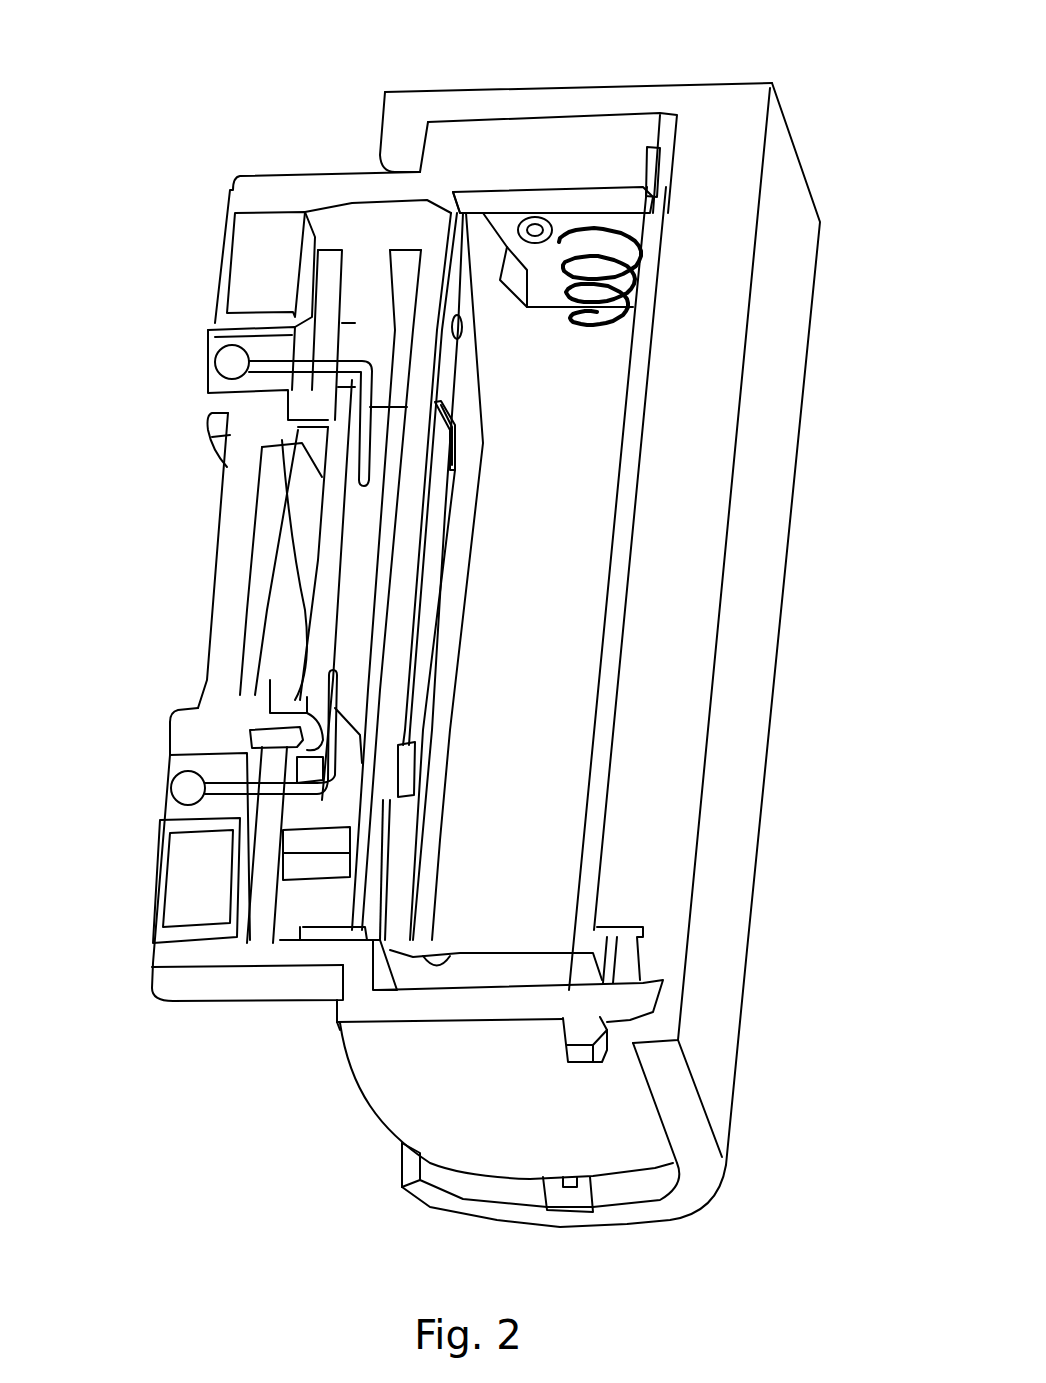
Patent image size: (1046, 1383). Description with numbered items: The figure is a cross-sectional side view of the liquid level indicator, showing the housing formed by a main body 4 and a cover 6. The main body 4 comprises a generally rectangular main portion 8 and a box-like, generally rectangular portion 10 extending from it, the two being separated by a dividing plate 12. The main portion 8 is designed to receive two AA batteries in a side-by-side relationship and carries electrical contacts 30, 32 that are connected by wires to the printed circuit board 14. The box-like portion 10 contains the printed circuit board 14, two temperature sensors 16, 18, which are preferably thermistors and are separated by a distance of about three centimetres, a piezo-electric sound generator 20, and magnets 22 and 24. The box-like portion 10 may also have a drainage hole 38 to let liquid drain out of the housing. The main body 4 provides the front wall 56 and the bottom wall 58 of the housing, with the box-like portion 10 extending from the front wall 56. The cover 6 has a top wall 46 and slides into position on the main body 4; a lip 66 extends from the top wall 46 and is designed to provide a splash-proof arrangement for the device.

The main body 4 is at (362, 1050).
The cover 6 is at (677, 707).
The main portion 8 is at (450, 163).
The box-like portion 10 is at (243, 187).
The dividing plate 12 is at (377, 930).
The printed circuit board 14 is at (343, 440).
The temperature sensor 16 is at (183, 788).
The temperature sensor 18 is at (230, 358).
The piezo-electric sound generator 20 is at (283, 687).
The magnet 22 is at (197, 880).
The magnet 24 is at (253, 253).
The electrical contact 30 is at (625, 325).
The electrical contact 32 is at (533, 943).
The drainage hole 38 is at (220, 693).
The top wall 46 is at (647, 93).
The front wall 56 is at (337, 1010).
The bottom wall 58 is at (393, 1110).
The lip 66 is at (393, 125).